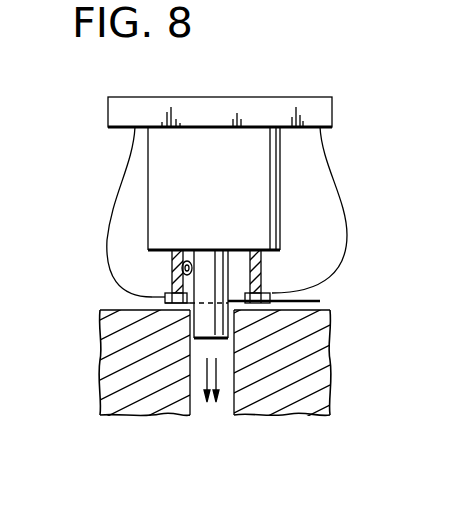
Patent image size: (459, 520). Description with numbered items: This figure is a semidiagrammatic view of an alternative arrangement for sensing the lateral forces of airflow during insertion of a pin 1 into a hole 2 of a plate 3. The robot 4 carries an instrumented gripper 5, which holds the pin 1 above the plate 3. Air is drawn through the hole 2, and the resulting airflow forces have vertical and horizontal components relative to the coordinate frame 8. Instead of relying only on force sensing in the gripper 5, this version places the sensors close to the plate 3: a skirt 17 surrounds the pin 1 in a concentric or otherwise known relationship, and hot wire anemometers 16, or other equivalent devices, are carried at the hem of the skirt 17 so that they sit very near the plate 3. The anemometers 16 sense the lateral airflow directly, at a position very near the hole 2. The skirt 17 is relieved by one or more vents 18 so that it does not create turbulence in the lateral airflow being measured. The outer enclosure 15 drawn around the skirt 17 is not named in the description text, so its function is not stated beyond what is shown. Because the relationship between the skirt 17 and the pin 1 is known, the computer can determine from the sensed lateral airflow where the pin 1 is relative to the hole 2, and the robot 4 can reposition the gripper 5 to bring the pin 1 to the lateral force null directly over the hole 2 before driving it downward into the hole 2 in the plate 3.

The coordinate frame 8 is at (283, 86).
The robot 4 is at (326, 113).
The flexible shroud 15 is at (337, 182).
The instrumented gripper 5 is at (282, 202).
The skirt 17 is at (258, 268).
The hot wire anemometers 16 is at (265, 296).
The vents 18 is at (182, 267).
The pin 1 is at (205, 288).
The plate 3 is at (313, 310).
The hole 2 is at (216, 413).